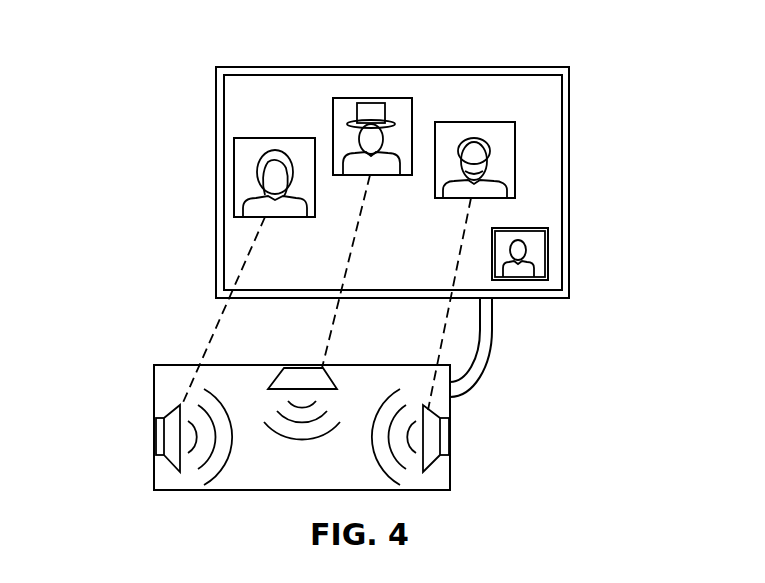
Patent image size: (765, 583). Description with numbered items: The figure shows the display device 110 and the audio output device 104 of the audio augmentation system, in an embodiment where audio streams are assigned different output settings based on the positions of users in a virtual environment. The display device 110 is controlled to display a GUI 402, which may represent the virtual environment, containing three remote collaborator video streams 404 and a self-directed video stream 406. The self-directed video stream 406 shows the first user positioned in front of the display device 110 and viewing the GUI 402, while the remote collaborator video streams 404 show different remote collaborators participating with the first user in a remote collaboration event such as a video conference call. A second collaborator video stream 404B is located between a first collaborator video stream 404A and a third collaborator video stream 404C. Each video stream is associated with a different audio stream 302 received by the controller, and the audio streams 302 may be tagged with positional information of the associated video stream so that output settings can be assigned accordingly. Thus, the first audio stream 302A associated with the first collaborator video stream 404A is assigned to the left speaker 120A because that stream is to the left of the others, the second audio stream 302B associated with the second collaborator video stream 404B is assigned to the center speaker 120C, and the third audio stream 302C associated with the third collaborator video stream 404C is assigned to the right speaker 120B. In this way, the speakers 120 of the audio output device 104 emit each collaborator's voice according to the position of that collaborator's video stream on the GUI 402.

The audio output device 104 is at (154, 410).
The display device 110 is at (216, 98).
The speakers 120 is at (331, 380).
The left speaker 120A is at (158, 446).
The right speaker 120B is at (432, 462).
The center speaker 120C is at (277, 380).
The audio streams 302 is at (241, 271).
The first audio stream 302A is at (203, 353).
The second audio stream 302B is at (357, 243).
The third audio stream 302C is at (450, 328).
The GUI 402 is at (524, 100).
The remote collaborator video streams 404 is at (342, 98).
The first collaborator video stream 404A is at (234, 183).
The second collaborator video stream 404B is at (405, 98).
The third collaborator video stream 404C is at (515, 165).
The self-directed video stream 406 is at (548, 255).